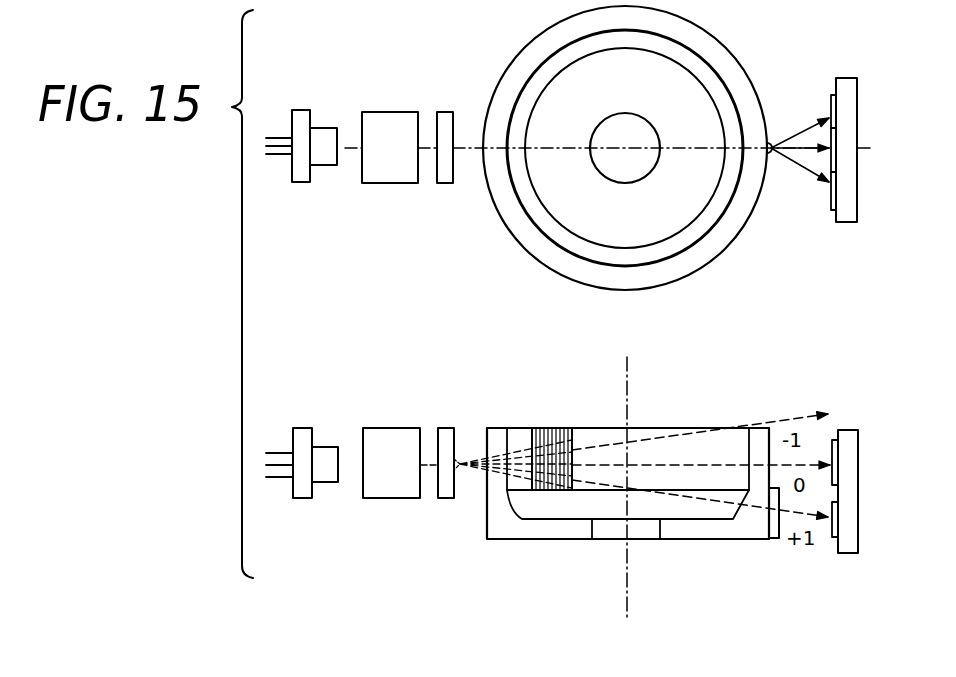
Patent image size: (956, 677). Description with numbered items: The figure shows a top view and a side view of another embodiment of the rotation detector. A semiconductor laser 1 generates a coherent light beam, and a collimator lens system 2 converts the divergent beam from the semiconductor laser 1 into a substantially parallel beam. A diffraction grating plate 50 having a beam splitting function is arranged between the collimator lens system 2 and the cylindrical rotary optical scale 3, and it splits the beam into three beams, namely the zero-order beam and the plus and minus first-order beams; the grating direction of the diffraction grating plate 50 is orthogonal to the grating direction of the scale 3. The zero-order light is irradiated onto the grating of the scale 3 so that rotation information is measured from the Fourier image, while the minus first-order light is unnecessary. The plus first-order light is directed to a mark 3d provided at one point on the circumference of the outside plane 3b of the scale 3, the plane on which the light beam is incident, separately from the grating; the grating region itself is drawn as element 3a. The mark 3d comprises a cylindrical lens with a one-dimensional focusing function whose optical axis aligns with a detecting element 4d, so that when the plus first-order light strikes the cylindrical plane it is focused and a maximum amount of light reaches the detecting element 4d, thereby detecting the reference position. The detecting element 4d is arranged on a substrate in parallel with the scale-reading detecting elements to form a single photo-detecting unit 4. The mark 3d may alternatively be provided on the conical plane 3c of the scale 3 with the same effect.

The semiconductor laser 1 is at (327, 135).
The collimator lens system 2 is at (393, 118).
The diffraction grating plate 50 is at (443, 117).
The rotary optical scale 3 is at (518, 58).
The diffraction grating 3a is at (520, 440).
The outside plane 3b is at (485, 513).
The conical plane 3c is at (532, 503).
The mark 3d is at (772, 143).
The photo-detecting unit 4 is at (843, 78).
The detecting element 4d is at (832, 533).